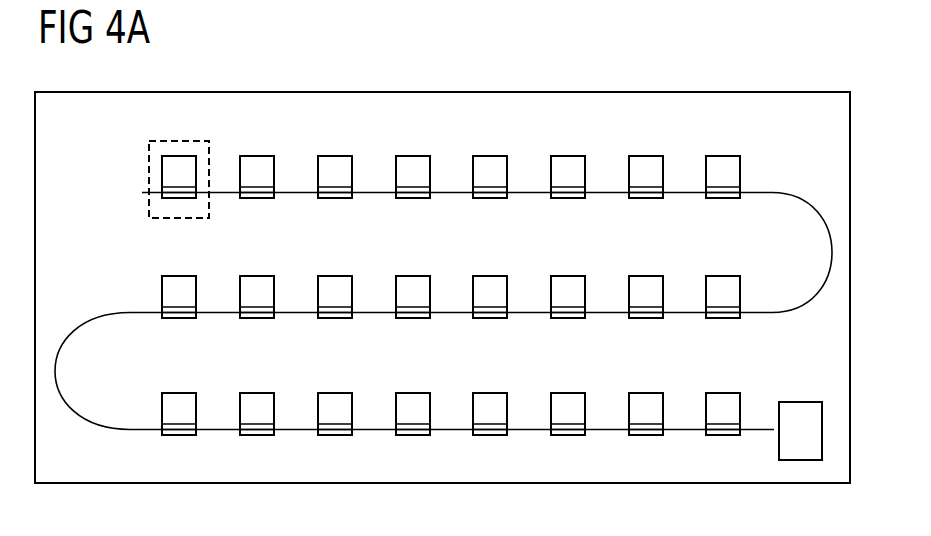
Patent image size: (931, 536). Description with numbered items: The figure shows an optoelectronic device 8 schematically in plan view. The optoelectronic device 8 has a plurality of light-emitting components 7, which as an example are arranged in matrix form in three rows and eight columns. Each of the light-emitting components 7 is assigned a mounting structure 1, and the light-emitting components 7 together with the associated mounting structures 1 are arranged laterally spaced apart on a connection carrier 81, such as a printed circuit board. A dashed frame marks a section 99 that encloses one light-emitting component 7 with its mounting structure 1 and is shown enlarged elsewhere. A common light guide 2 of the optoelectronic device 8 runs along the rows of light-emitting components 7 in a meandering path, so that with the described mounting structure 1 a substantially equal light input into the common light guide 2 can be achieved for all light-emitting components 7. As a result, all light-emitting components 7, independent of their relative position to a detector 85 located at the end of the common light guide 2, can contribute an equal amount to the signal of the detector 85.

The optoelectronic device 8 is at (750, 83).
The connection carrier 81 is at (605, 104).
The common light guide 2 is at (776, 193).
The light-emitting component 7 is at (180, 160).
The mounting structure 1 is at (180, 197).
The section 99 is at (149, 162).
The detector 85 is at (802, 416).